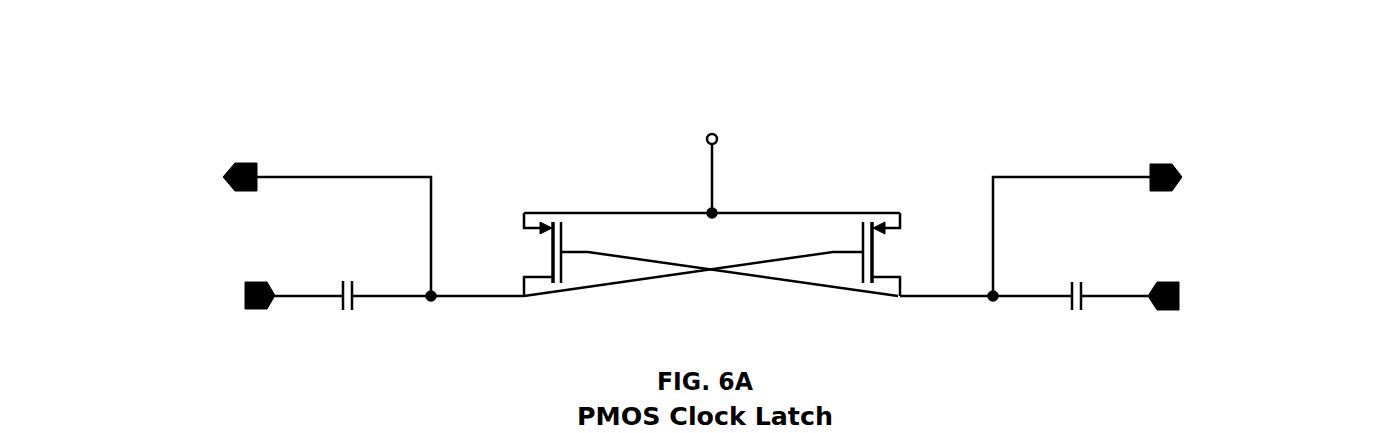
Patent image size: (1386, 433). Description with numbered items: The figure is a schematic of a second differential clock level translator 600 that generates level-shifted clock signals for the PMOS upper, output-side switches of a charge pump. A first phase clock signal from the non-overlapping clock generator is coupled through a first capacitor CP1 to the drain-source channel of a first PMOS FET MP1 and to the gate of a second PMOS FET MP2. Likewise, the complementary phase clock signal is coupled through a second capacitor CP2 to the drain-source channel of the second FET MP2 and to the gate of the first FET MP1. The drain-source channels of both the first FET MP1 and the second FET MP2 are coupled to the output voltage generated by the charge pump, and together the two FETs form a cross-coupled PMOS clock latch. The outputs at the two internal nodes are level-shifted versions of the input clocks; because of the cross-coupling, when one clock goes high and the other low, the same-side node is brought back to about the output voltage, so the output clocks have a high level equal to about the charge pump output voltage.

The second differential clock level translator 600 is at (102, 38).
The first PMOS FET MP1 is at (528, 254).
The second PMOS FET MP2 is at (896, 254).
The first capacitor CP1 is at (347, 313).
The second capacitor CP2 is at (1076, 315).